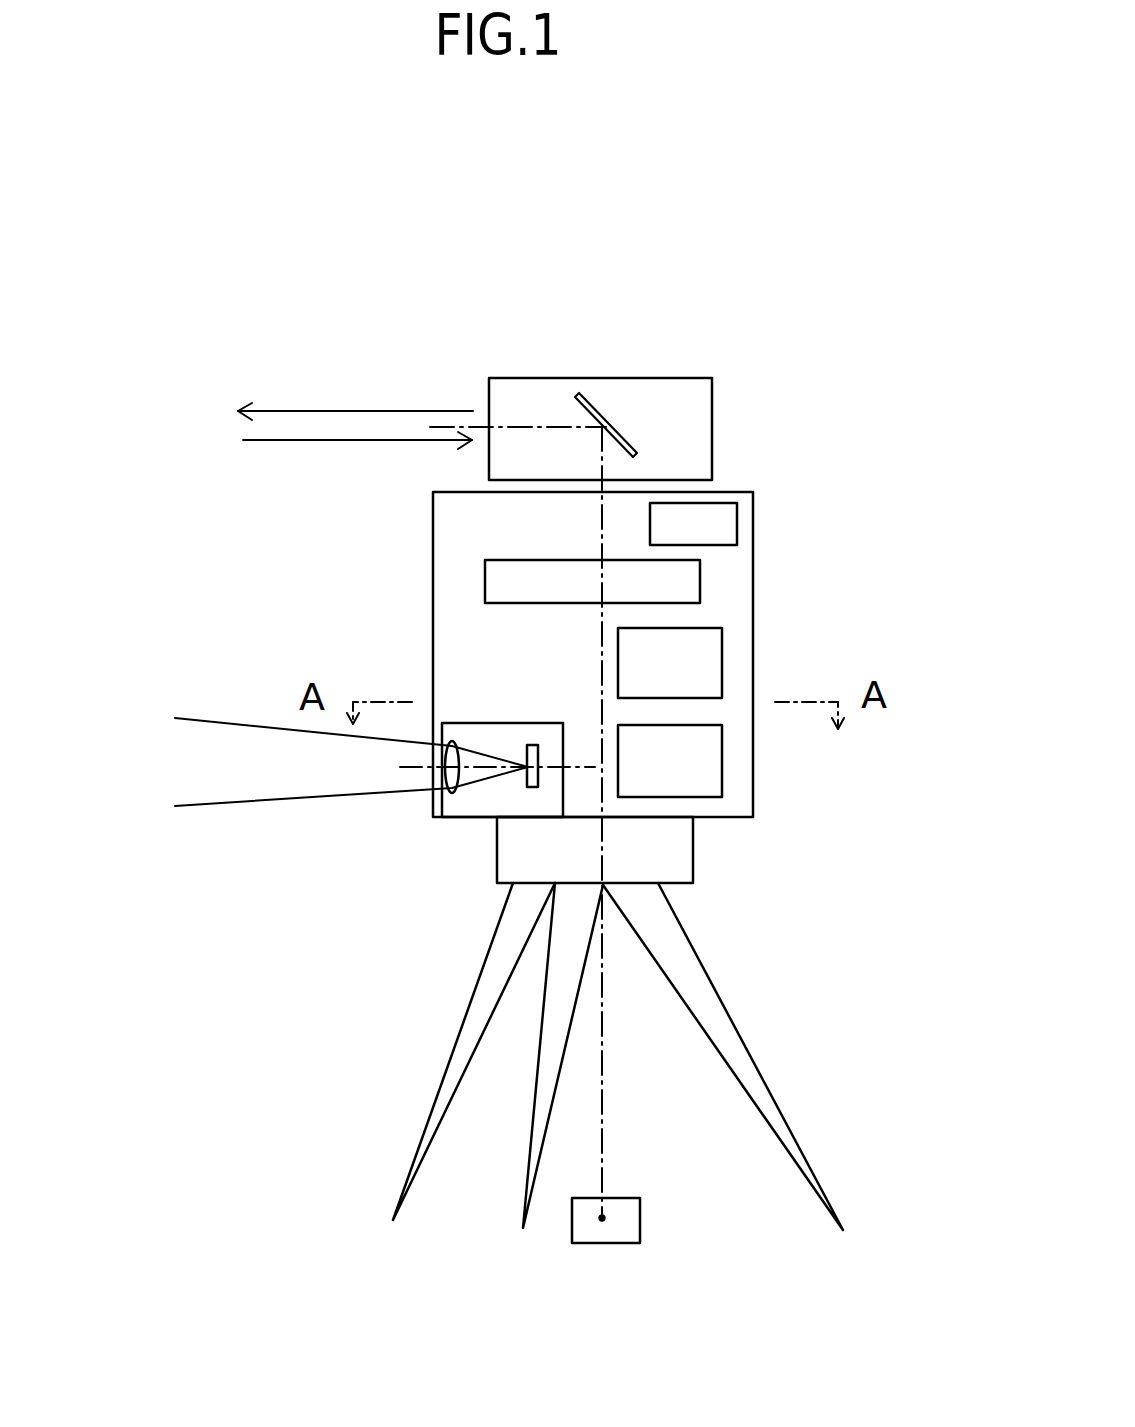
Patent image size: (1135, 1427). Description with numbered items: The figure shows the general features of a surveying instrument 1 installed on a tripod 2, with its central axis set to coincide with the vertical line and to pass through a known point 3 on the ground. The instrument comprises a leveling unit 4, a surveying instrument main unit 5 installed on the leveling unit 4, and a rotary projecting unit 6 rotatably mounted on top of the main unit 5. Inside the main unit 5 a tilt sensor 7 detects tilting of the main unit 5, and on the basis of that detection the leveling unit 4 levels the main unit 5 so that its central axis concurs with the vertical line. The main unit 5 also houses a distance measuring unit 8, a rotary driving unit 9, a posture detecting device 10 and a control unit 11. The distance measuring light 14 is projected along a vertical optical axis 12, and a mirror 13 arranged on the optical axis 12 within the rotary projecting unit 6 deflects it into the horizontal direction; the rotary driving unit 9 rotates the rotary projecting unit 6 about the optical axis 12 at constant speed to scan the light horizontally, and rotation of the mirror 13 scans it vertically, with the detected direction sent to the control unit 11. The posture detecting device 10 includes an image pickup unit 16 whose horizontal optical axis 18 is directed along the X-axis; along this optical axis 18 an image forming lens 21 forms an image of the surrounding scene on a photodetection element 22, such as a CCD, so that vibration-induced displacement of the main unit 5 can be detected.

The surveying instrument 1 is at (520, 262).
The tripod 2 is at (448, 1070).
The known point 3 is at (602, 1218).
The leveling unit 4 is at (693, 863).
The surveying instrument main unit 5 is at (433, 620).
The rotary projecting unit 6 is at (712, 423).
The tilt sensor 7 is at (700, 583).
The distance measuring unit 8 is at (722, 652).
The rotary driving unit 9 is at (737, 518).
The posture detecting device 10 is at (482, 708).
The control unit 11 is at (722, 772).
The vertical optical axis 12 is at (602, 517).
The mirror 13 is at (608, 422).
The distance measuring light 14 is at (375, 395).
The image pickup unit 16 is at (480, 818).
The optical axis 18 is at (580, 762).
The image forming lens 21 is at (450, 815).
The photodetection element 22 is at (533, 792).